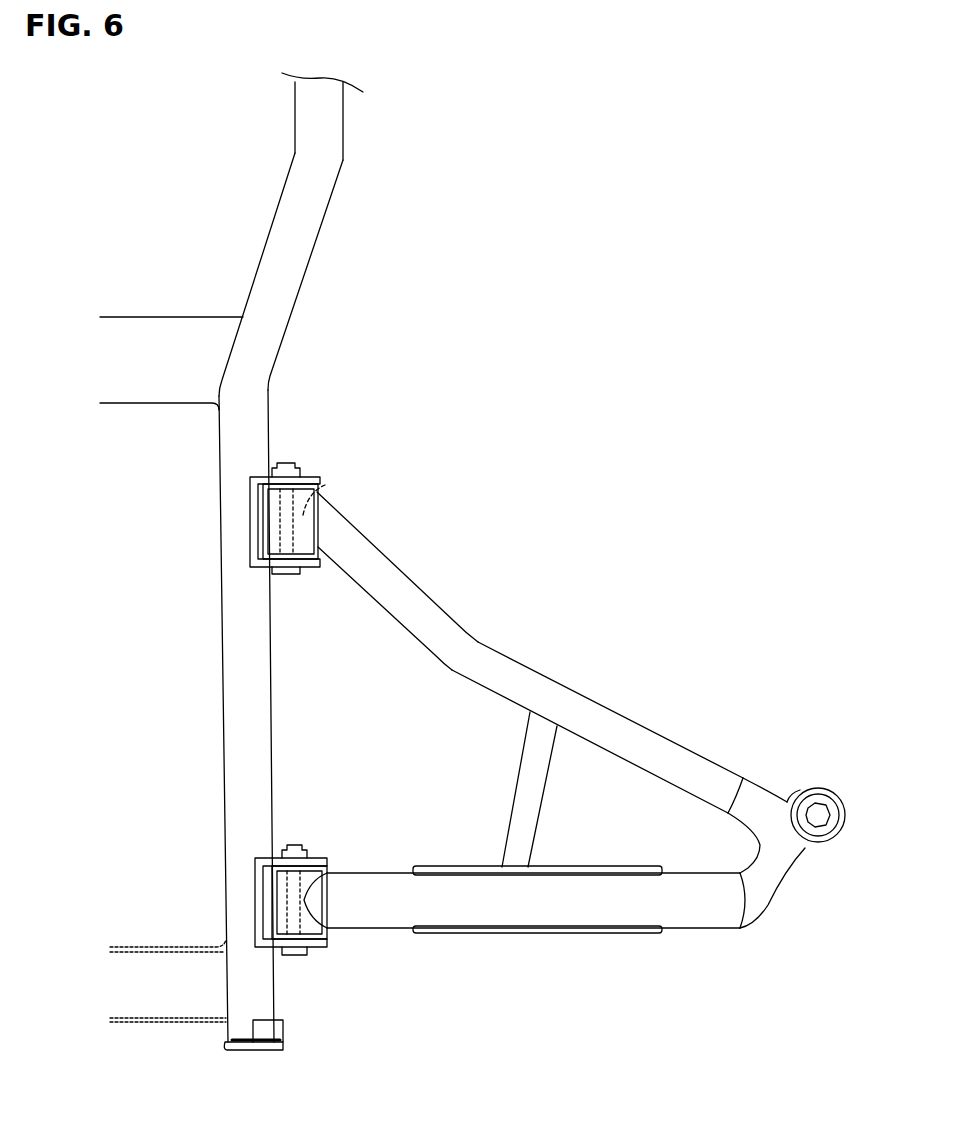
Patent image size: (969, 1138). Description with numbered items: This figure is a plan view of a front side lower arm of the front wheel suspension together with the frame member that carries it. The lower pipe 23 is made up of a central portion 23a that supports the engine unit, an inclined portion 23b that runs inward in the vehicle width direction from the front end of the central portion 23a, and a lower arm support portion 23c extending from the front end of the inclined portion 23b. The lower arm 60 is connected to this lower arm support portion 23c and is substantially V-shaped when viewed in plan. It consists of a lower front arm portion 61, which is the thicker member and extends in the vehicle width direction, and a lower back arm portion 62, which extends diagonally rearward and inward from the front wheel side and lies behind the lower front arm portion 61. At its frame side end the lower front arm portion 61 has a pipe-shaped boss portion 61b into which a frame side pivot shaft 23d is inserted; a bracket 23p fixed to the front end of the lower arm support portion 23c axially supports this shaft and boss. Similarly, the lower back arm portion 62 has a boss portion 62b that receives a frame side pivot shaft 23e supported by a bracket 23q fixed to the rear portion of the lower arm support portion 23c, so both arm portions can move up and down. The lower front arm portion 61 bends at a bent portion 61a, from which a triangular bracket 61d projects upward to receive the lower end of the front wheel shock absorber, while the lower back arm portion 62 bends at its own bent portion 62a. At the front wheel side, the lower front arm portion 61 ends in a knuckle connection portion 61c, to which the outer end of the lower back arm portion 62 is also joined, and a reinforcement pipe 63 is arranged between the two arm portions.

The lower pipe 23 is at (312, 561).
The central portion 23a is at (345, 122).
The inclined portion 23b is at (295, 286).
The lower arm support portion 23c is at (235, 690).
The bracket 23q is at (255, 520).
The frame side pivot shaft 23e is at (258, 543).
The bracket 23p is at (257, 880).
The frame side pivot shaft 23d is at (270, 905).
The lower arm 60 is at (574, 717).
The lower back arm portion 62 is at (523, 621).
The bent portion 62a is at (477, 655).
The boss portion 62b is at (325, 500).
The reinforcement pipe 63 is at (538, 767).
The lower front arm portion 61 is at (574, 907).
The bent portion 61a is at (458, 910).
The boss portion 61b is at (315, 950).
The knuckle connection portion 61c is at (778, 848).
The bracket 61d is at (570, 873).